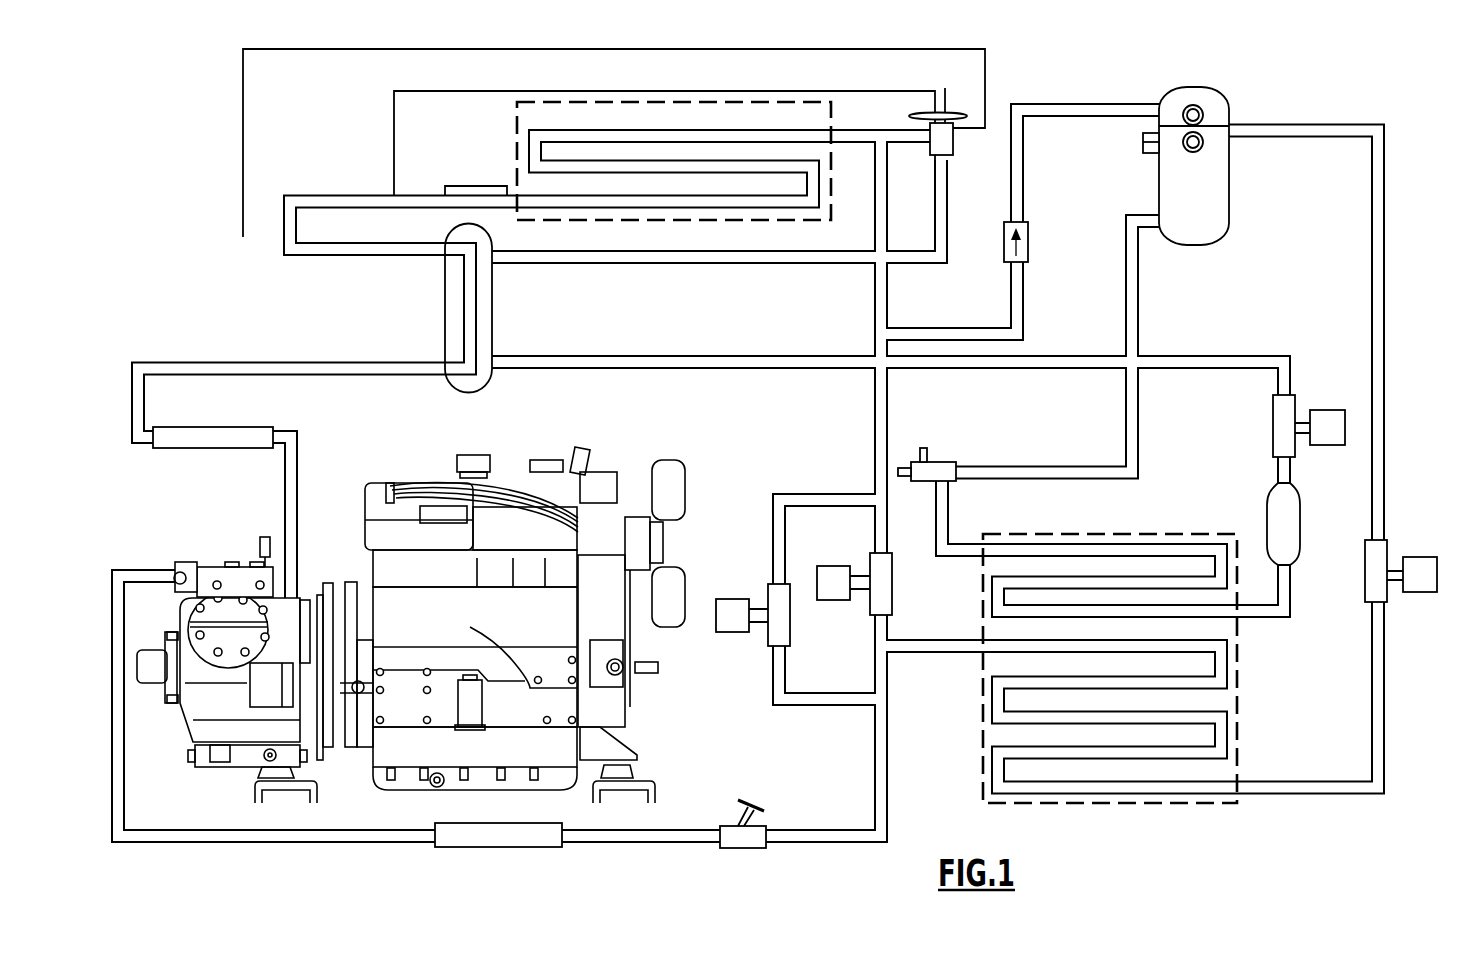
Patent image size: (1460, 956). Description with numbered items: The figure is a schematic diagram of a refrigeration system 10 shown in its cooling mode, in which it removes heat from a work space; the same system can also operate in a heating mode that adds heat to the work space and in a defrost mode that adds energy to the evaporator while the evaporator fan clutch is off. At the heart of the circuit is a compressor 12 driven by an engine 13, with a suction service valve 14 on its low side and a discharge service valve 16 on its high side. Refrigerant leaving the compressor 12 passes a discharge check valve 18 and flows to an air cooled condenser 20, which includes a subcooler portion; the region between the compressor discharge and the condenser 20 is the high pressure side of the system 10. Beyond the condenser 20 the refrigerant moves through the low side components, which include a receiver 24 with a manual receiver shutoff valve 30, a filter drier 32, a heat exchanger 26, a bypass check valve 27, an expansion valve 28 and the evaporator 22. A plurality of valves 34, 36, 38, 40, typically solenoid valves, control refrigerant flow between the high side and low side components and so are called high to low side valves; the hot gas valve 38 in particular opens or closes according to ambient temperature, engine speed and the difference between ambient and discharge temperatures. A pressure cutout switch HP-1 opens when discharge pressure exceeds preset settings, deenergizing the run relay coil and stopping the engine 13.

The refrigeration system 10 is at (1352, 811).
The compressor 12 is at (327, 755).
The engine 13 is at (620, 727).
The suction service valve 14 is at (292, 620).
The discharge service valve 16 is at (178, 565).
The discharge check valve 18 is at (753, 849).
The air cooled condenser 20 is at (1078, 804).
The evaporator 22 is at (708, 103).
The receiver 24 is at (1229, 193).
The heat exchanger 26 is at (500, 340).
The bypass check valve 27 is at (1028, 243).
The expansion valve 28 is at (910, 117).
The manual receiver shutoff valve 30 is at (927, 452).
The filter drier 32 is at (1267, 506).
The valve 34 is at (1418, 557).
The valve 36 is at (1272, 421).
The hot gas valve 38 is at (826, 565).
The valve 40 is at (793, 628).
The pressure cutout switch HP-1 is at (267, 533).